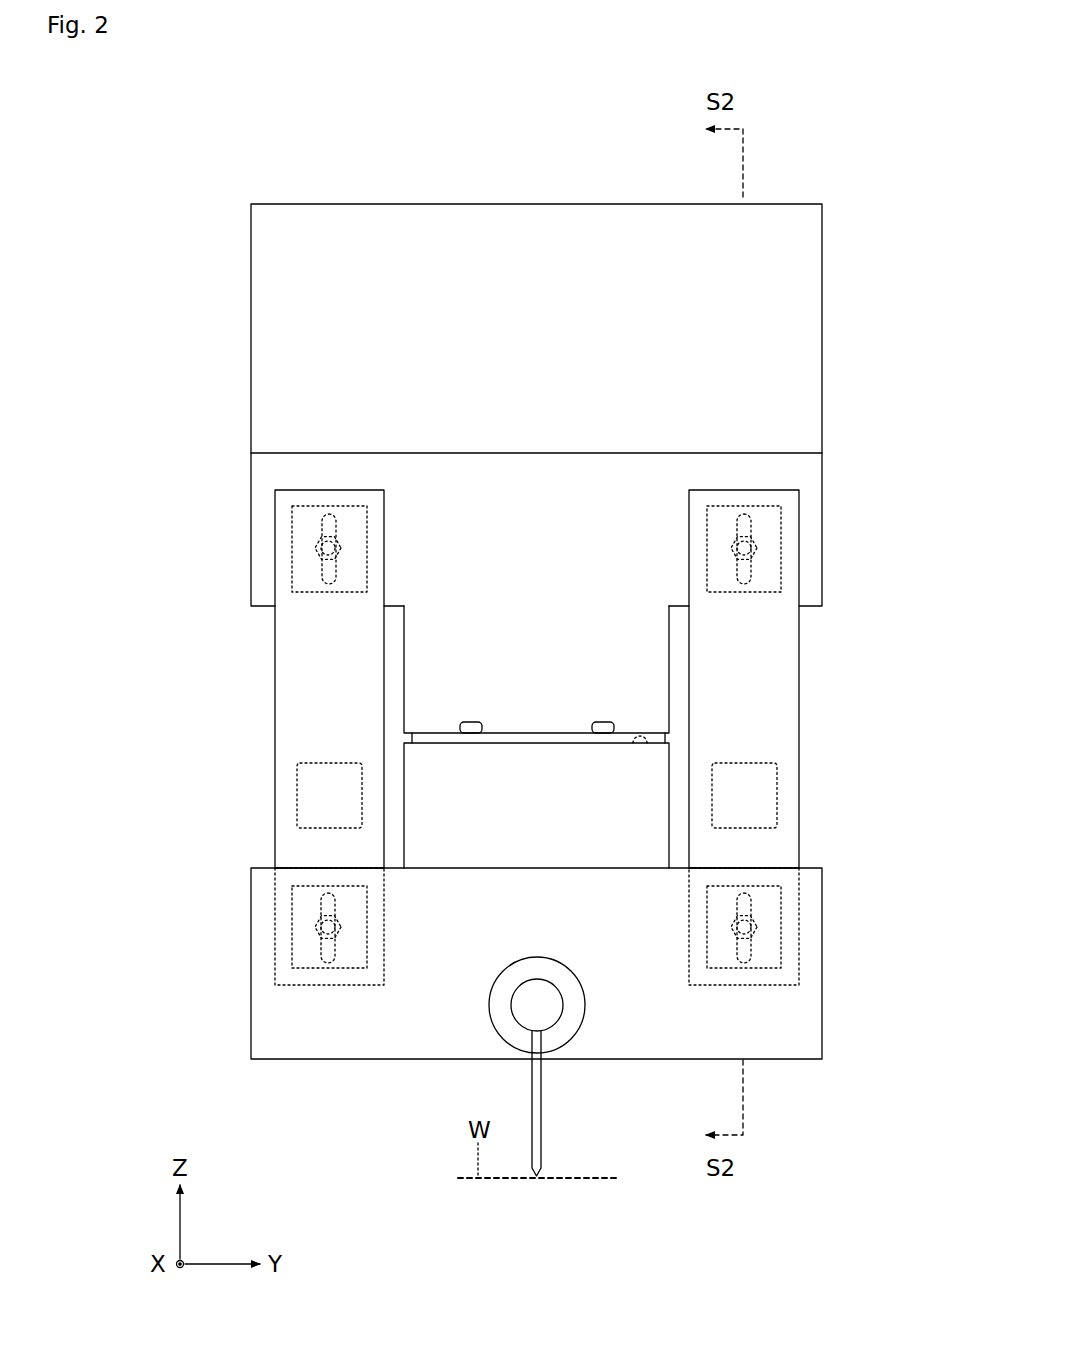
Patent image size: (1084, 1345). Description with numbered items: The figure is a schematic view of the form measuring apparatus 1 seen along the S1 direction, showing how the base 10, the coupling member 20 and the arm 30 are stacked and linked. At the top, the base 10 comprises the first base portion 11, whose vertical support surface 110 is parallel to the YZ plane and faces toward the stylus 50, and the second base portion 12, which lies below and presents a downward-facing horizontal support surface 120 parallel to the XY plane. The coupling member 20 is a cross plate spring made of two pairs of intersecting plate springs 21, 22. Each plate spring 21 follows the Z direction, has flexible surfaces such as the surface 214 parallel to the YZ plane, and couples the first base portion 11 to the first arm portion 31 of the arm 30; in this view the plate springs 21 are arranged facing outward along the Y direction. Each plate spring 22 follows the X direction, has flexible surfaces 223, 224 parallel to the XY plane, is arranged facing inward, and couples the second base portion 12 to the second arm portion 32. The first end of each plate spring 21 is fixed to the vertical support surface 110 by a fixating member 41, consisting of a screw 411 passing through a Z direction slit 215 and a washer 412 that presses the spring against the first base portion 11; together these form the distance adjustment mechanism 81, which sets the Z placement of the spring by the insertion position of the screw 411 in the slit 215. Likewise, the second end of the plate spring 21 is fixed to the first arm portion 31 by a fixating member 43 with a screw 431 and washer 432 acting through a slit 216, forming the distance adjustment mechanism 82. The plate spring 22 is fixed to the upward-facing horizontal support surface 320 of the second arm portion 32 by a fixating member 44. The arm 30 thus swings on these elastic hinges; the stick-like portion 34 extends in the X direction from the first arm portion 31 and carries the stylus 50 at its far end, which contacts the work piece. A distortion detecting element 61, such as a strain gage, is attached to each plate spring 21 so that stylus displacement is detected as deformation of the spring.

The form measuring apparatus 1 is at (905, 128).
The base 10 is at (510, 405).
The first base portion 11 is at (822, 327).
The vertical support surface 110 is at (822, 467).
The second base portion 12 is at (543, 606).
The horizontal support surface 120 is at (445, 737).
The coupling member 20 is at (512, 765).
The plate spring 21 is at (545, 679).
The surface of plate spring 214 is at (275, 684).
The slit 215 is at (340, 528).
The slit 216 is at (336, 968).
The plate spring 22 is at (538, 743).
The surface of plate spring 223 is at (568, 733).
The surface of plate spring 224 is at (568, 743).
The arm 30 is at (501, 915).
The first arm portion 31 is at (822, 1034).
The second arm portion 32 is at (543, 868).
The horizontal support surface 320 is at (650, 750).
The stick-like portion 34 is at (514, 1014).
The fixating member 41 is at (536, 546).
The screw 411 is at (341, 548).
The washer 412 is at (357, 568).
The fixating member 43 is at (536, 926).
The screw 431 is at (345, 926).
The washer 432 is at (357, 944).
The fixating member 44 is at (471, 722).
The stylus 50 is at (541, 1152).
The distortion detecting element 61 is at (297, 800).
The distance adjustment mechanism 81 is at (292, 528).
The distance adjustment mechanism 82 is at (292, 913).